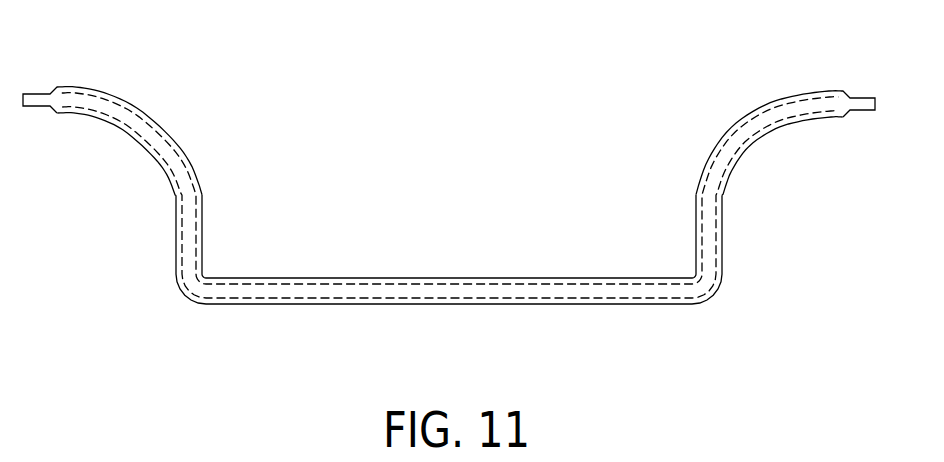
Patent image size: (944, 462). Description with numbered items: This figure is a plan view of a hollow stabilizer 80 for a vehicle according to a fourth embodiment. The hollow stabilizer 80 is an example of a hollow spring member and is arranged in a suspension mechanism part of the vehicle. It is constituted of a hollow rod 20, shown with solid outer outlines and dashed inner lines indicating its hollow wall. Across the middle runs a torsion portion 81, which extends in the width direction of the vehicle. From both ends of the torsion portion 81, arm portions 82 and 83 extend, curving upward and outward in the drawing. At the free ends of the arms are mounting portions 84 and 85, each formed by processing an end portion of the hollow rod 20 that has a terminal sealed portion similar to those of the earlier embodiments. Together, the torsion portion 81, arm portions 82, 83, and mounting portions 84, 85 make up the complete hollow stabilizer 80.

The hollow stabilizer 80 is at (287, 330).
The torsion portion 81 is at (400, 279).
The arm portion 82 is at (174, 131).
The arm portion 83 is at (722, 138).
The mounting portion 84 is at (33, 92).
The mounting portion 85 is at (858, 95).
The hollow rod 20 is at (500, 306).